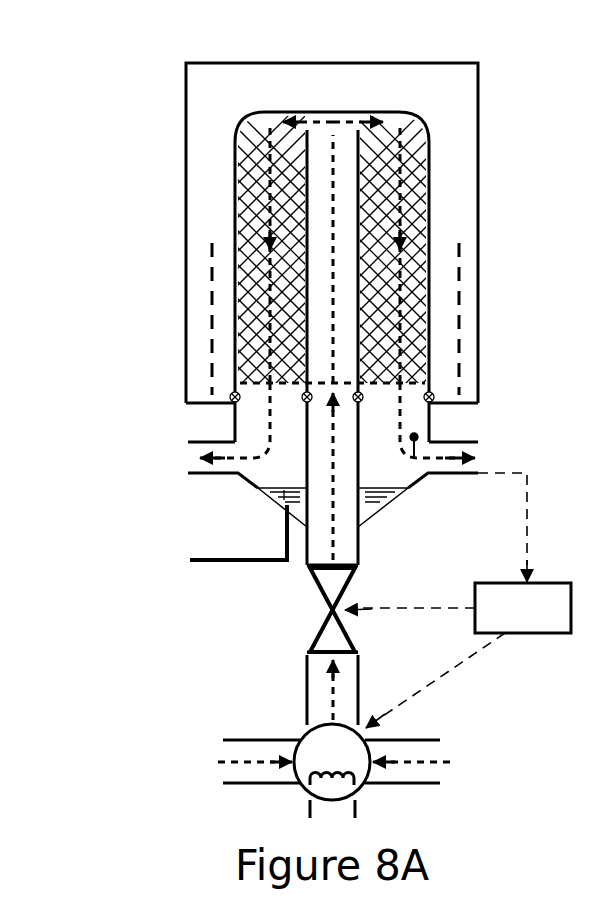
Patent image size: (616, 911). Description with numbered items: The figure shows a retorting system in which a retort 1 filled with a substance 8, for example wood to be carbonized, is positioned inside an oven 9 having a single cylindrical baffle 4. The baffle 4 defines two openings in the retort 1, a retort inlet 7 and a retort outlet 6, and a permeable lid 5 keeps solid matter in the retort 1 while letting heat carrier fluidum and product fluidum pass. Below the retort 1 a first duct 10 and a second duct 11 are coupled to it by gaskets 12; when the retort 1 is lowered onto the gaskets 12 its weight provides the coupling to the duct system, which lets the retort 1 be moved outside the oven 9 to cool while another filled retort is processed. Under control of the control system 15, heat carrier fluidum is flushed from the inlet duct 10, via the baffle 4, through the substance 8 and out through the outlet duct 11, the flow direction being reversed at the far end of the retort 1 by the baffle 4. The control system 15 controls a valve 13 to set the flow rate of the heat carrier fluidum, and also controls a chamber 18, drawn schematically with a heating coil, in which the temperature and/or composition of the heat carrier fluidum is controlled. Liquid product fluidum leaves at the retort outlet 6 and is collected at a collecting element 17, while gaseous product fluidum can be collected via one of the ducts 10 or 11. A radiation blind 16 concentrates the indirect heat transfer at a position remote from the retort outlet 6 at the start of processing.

The retort 1 is at (223, 123).
The baffle 4 is at (305, 180).
The permeable lid 5 is at (425, 384).
The retort outlet 6 is at (263, 396).
The retort inlet 7 is at (352, 405).
The substance 8 is at (418, 203).
The oven 9 is at (186, 147).
The first duct 10 is at (338, 552).
The second duct 11 is at (483, 455).
The gaskets 12 is at (230, 392).
The valve 13 is at (322, 610).
The control system 15 is at (532, 603).
The radiation blind 16 is at (212, 280).
The collecting element 17 is at (245, 555).
The chamber 18 is at (315, 742).